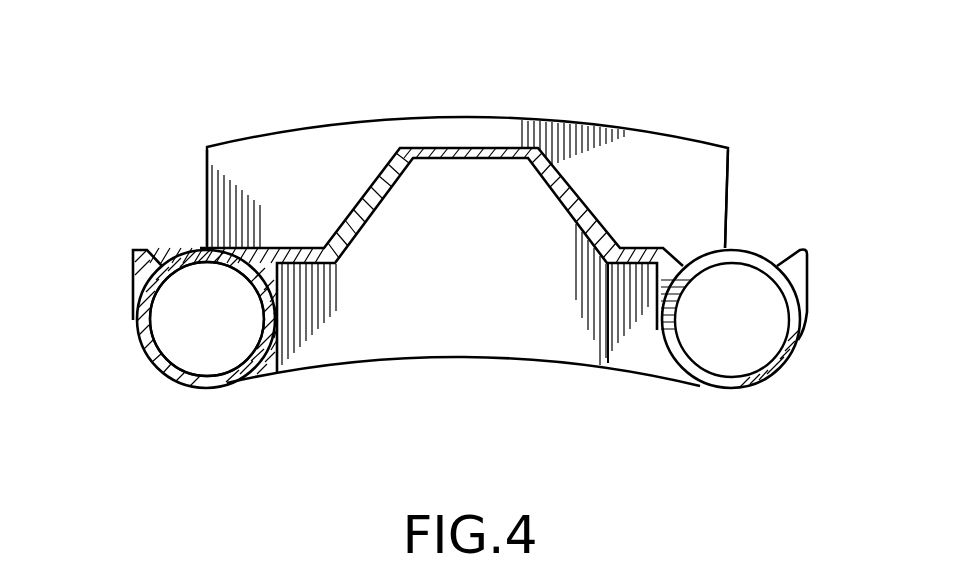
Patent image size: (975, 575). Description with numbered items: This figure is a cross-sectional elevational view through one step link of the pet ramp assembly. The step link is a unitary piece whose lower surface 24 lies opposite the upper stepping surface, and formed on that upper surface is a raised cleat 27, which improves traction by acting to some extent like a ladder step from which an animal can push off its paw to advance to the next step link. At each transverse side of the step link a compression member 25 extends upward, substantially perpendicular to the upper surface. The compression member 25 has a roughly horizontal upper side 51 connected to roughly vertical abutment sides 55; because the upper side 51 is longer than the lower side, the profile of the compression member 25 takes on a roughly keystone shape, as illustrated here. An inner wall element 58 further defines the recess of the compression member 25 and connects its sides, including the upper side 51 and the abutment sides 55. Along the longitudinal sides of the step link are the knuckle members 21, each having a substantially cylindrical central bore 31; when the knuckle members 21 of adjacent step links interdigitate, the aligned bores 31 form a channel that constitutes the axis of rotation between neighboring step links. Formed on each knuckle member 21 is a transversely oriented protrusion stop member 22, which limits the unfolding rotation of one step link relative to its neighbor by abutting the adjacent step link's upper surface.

The knuckle member 21 is at (160, 375).
The protrusion stop member 22 is at (133, 256).
The lower surface 24 is at (549, 365).
The compression member 25 is at (348, 170).
The cleat 27 is at (473, 148).
The central bore 31 is at (217, 345).
The upper side 51 is at (643, 125).
The abutment side 55 is at (728, 180).
The inner wall element 58 is at (280, 198).